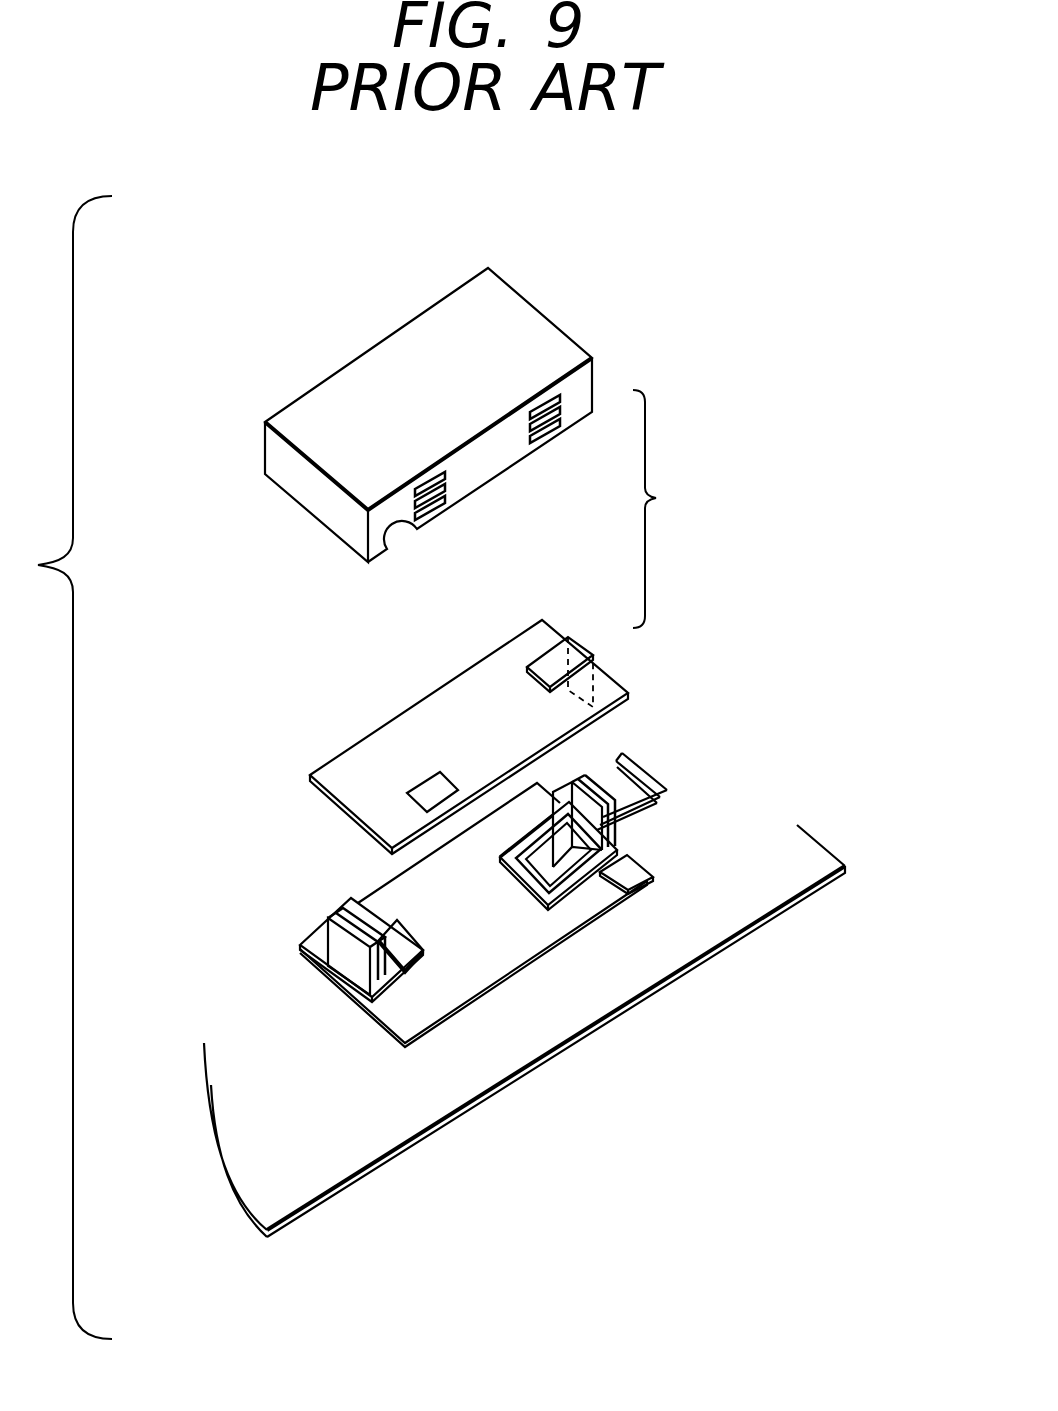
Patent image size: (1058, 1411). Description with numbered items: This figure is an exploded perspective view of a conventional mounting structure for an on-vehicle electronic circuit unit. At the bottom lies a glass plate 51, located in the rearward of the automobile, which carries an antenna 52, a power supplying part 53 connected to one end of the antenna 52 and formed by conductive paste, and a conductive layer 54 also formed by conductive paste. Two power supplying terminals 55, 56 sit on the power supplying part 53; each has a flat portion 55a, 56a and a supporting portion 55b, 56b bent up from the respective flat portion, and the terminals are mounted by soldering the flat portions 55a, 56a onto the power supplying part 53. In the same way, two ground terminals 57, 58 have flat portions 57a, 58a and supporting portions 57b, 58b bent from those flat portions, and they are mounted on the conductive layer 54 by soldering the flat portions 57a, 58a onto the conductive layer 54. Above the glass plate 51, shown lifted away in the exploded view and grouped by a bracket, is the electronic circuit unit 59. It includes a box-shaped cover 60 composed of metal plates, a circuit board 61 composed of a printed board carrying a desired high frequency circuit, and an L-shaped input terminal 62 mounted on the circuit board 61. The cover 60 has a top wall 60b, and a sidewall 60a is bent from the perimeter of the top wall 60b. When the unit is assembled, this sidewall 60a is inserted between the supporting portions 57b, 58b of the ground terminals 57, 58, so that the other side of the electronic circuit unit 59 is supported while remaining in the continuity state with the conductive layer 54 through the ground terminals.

The glass plate 51 is at (797, 853).
The antenna 52 is at (653, 808).
The power supplying part 53 is at (620, 840).
The conductive layer 54 is at (513, 950).
The power supplying terminal 55 is at (749, 851).
The flat portion 55a is at (607, 885).
The supporting portion 55b is at (628, 765).
The power supplying terminal 56 is at (634, 858).
The flat portion 56a is at (547, 877).
The supporting portion 56b is at (570, 883).
The ground terminal 57 is at (276, 1081).
The flat portion 57a is at (398, 988).
The supporting portion 57b is at (318, 960).
The ground terminal 58 is at (370, 1037).
The flat portion 58a is at (420, 968).
The supporting portion 58b is at (367, 912).
The electronic circuit unit 59 is at (663, 509).
The cover 60 is at (478, 422).
The sidewall 60a is at (318, 490).
The top wall 60b is at (408, 348).
The circuit board 61 is at (496, 693).
The input terminal 62 is at (582, 650).